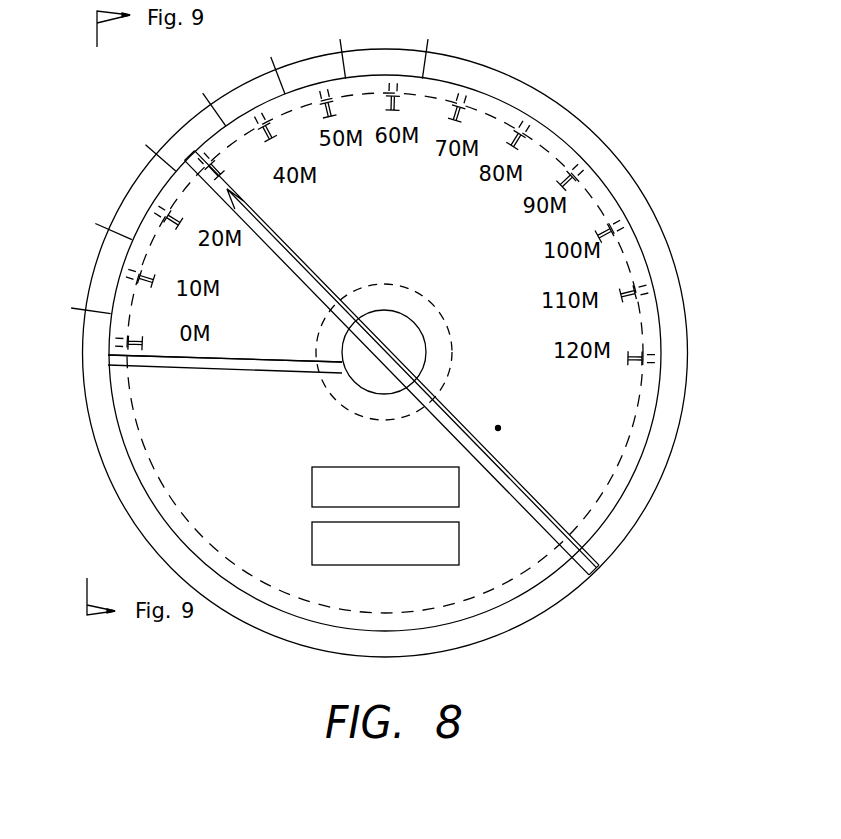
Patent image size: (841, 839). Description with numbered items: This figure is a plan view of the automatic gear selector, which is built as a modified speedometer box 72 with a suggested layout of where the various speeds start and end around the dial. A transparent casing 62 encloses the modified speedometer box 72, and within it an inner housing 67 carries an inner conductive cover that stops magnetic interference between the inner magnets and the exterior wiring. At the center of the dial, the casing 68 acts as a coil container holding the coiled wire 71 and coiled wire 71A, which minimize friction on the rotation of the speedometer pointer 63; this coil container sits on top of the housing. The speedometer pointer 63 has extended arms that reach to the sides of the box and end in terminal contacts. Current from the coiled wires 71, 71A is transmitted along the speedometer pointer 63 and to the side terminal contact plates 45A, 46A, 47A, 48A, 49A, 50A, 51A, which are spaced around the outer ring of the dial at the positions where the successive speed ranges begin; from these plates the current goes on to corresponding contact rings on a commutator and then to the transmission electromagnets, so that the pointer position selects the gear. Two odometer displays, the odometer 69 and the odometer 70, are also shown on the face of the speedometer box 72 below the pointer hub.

The transparent casing 62 is at (633, 181).
The speedometer pointer 63 is at (523, 472).
The inner housing 67 is at (152, 487).
The casing 68 is at (438, 299).
The odometer 69 is at (384, 465).
The odometer 70 is at (425, 566).
The coiled wire 71 is at (297, 376).
The coiled wire 71A is at (303, 352).
The modified speedometer box 72 is at (498, 428).
The side terminal contact plate 45A is at (70, 302).
The side terminal contact plate 46A is at (89, 221).
The side terminal contact plate 47A is at (131, 152).
The side terminal contact plate 48A is at (196, 96).
The side terminal contact plate 49A is at (261, 62).
The side terminal contact plate 50A is at (341, 49).
The side terminal contact plate 51A is at (422, 49).